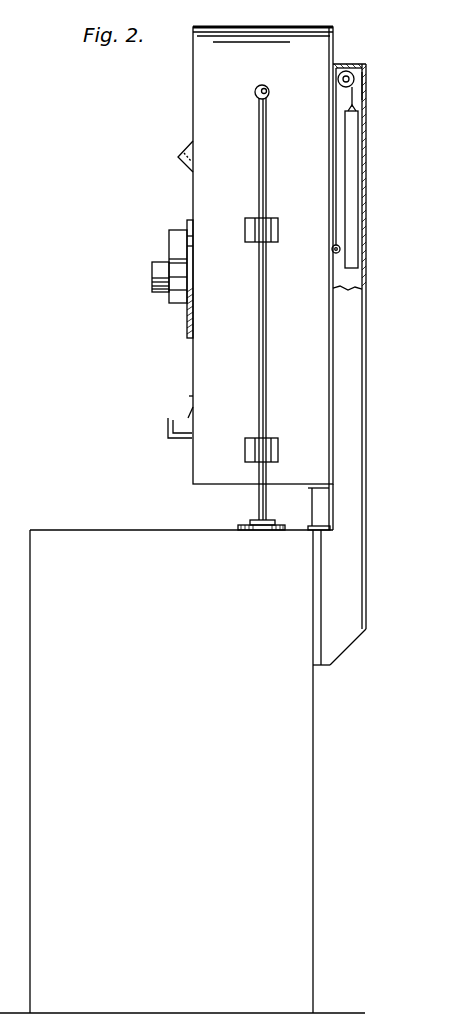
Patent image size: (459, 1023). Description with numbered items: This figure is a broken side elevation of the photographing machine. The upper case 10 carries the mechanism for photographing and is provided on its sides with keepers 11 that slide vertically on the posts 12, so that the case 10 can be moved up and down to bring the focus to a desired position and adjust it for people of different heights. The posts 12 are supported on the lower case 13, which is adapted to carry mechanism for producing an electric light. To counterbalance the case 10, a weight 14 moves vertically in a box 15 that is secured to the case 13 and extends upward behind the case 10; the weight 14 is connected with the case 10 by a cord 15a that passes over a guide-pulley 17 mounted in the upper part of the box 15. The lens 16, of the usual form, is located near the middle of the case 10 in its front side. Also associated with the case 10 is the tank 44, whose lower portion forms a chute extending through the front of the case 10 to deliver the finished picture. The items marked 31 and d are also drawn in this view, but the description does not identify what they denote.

The case 10 is at (263, 278).
The keepers 11 is at (265, 227).
The posts 12 is at (262, 353).
The case 13 is at (183, 771).
The weight 14 is at (350, 143).
The box 15 is at (363, 110).
The cord 15a is at (363, 88).
The lens 16 is at (164, 291).
The guide-pulley 17 is at (347, 70).
The bracket 31 is at (186, 151).
The tank 44 is at (181, 430).
The point d is at (188, 380).